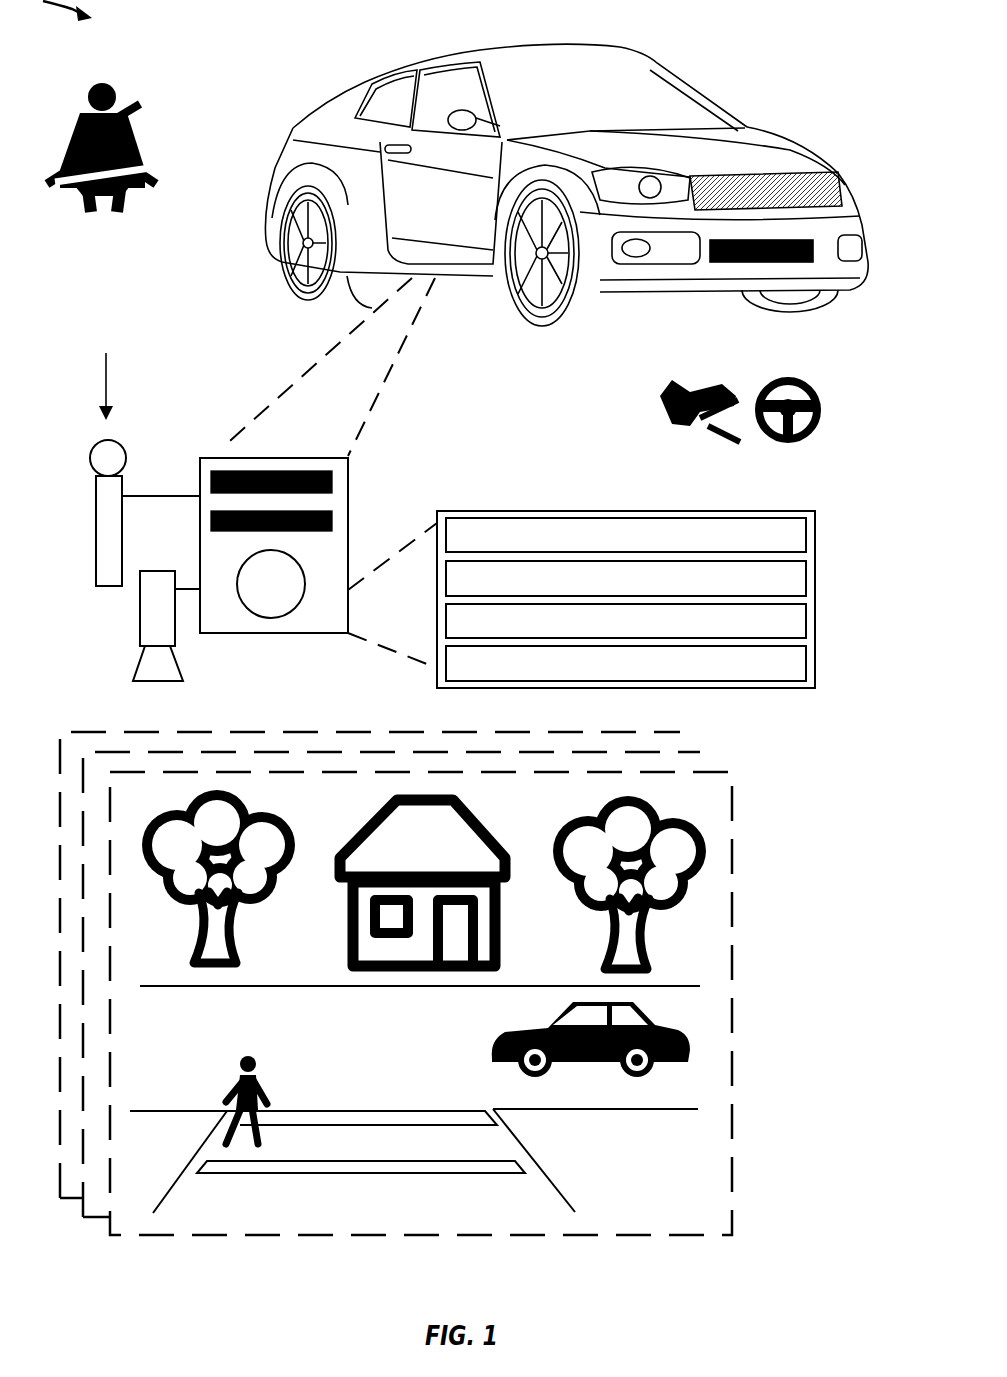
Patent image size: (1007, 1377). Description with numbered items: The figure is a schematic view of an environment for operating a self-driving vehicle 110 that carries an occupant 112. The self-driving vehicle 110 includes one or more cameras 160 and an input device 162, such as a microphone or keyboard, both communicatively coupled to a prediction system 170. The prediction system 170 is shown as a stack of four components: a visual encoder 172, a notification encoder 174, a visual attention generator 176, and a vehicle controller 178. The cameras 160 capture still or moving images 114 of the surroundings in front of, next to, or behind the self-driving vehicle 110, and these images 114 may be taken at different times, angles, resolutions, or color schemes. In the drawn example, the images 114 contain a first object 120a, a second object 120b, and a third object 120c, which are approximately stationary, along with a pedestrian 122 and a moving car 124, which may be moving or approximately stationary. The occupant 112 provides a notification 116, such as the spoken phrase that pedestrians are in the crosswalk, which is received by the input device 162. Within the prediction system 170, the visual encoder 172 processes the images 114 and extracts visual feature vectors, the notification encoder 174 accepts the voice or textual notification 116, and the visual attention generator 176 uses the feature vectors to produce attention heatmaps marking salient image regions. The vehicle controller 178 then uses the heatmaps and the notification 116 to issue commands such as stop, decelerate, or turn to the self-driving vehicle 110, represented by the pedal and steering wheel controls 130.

The self-driving vehicle 110 is at (340, 102).
The occupant 112 is at (98, 90).
The images 114 is at (732, 775).
The notification 116 is at (190, 302).
The first object 120a is at (280, 815).
The second object 120b is at (482, 820).
The third object 120c is at (677, 900).
The pedestrian 122 is at (259, 1147).
The moving car 124 is at (732, 1023).
The vehicle controls 130 is at (660, 400).
The cameras 160 is at (175, 632).
The input device 162 is at (125, 447).
The prediction system 170 is at (348, 500).
The visual encoder 172 is at (626, 535).
The notification encoder 174 is at (626, 578).
The visual attention generator 176 is at (626, 621).
The vehicle controller 178 is at (626, 663).